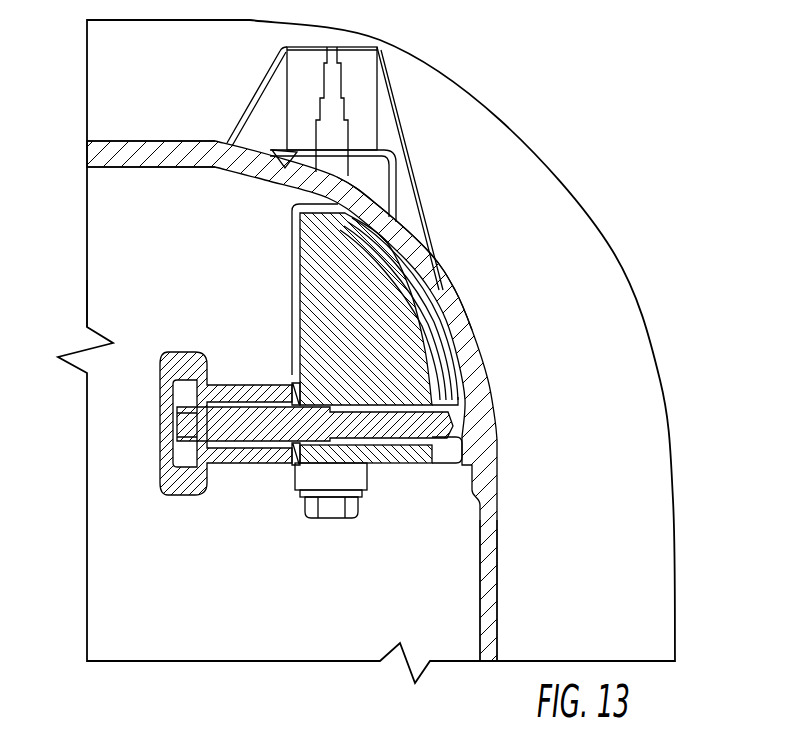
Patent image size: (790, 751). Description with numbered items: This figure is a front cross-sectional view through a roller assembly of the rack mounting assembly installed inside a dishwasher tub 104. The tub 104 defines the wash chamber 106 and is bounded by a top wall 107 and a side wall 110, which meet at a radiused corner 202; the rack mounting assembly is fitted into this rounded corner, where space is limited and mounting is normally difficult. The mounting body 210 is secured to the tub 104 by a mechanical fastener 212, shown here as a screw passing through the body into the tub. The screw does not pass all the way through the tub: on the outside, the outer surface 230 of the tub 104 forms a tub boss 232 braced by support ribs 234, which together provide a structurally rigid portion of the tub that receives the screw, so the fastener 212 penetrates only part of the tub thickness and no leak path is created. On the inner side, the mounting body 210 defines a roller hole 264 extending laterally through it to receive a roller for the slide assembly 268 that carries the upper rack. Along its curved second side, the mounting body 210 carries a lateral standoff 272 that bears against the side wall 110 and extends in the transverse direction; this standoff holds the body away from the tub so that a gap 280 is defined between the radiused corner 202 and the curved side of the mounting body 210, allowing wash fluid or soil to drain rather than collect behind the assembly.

The tub 104 is at (133, 153).
The wash chamber 106 is at (118, 311).
The top wall 107 is at (155, 170).
The side wall 110 is at (480, 617).
The radiused corner 202 is at (433, 255).
The mounting body 210 is at (335, 320).
The mechanical fastener 212 is at (330, 508).
The outer surface 230 is at (205, 135).
The tub boss 232 is at (365, 92).
The support rib 234 is at (272, 105).
The roller hole 264 is at (418, 445).
The slide assembly 268 is at (250, 430).
The lateral standoff 272 is at (455, 447).
The gap 280 is at (440, 375).